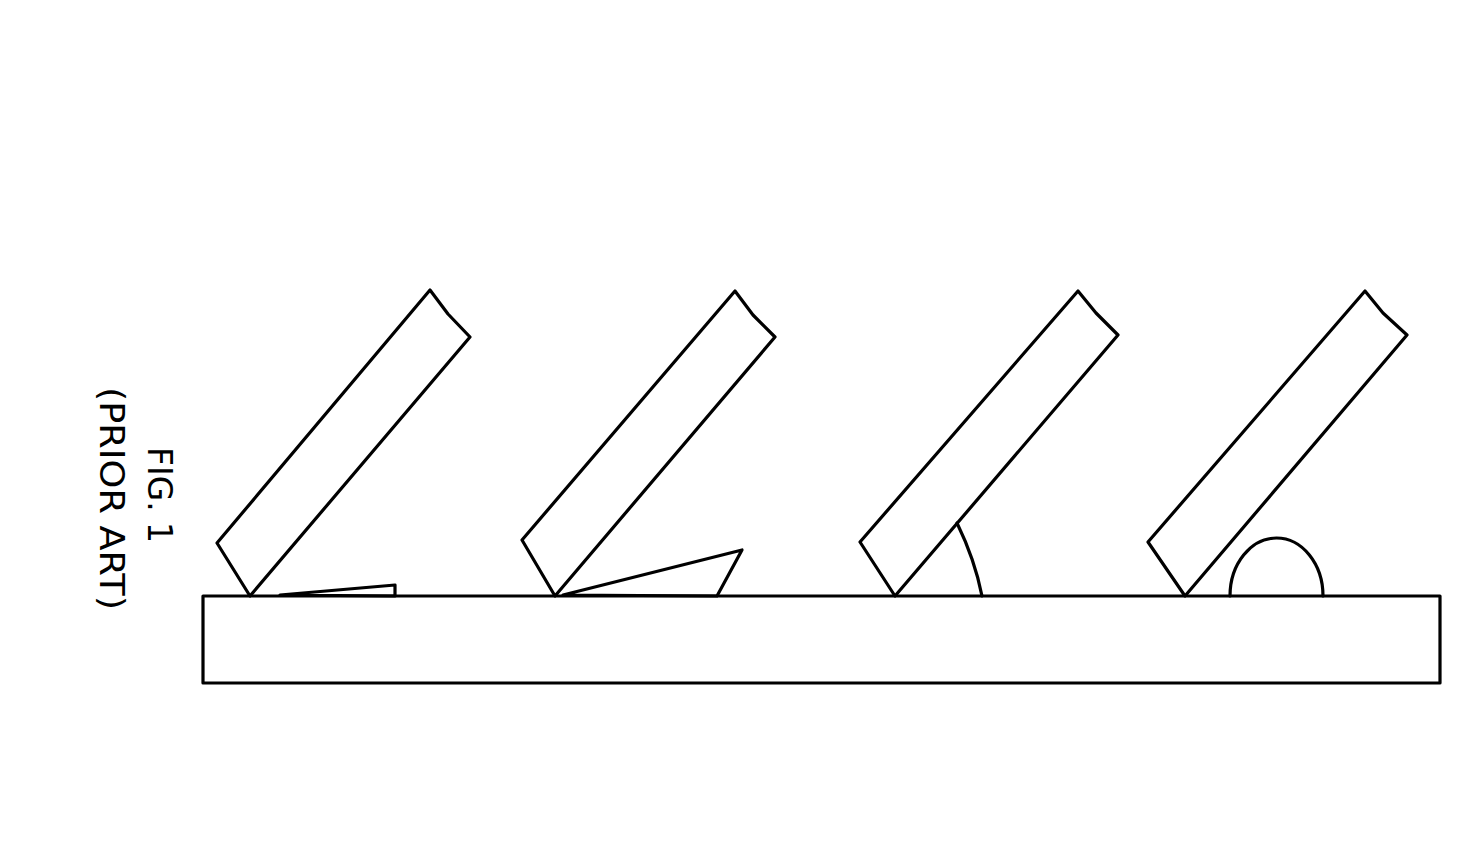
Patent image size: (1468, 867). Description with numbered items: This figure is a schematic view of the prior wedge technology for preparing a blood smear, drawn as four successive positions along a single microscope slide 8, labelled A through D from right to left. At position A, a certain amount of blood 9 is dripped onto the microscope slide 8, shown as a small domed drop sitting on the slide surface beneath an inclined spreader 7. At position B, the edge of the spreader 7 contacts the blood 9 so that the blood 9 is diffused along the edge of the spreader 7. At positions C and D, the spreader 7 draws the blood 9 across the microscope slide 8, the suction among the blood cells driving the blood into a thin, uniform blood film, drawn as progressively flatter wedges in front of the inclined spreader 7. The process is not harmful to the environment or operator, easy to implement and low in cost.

The spreader 7 is at (368, 395).
The microscope slide 8 is at (860, 645).
The blood 9 is at (657, 582).